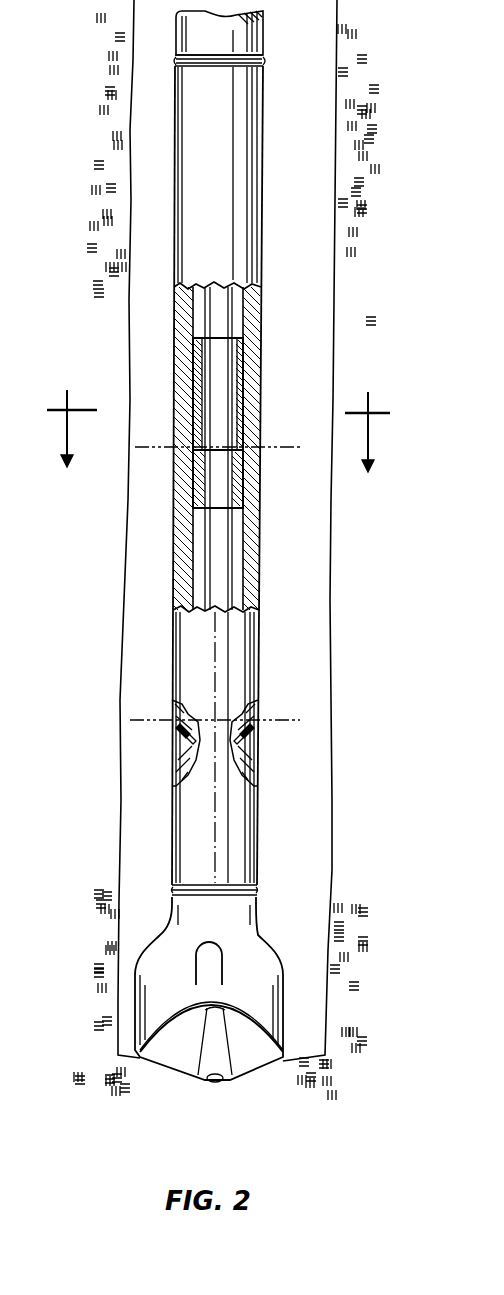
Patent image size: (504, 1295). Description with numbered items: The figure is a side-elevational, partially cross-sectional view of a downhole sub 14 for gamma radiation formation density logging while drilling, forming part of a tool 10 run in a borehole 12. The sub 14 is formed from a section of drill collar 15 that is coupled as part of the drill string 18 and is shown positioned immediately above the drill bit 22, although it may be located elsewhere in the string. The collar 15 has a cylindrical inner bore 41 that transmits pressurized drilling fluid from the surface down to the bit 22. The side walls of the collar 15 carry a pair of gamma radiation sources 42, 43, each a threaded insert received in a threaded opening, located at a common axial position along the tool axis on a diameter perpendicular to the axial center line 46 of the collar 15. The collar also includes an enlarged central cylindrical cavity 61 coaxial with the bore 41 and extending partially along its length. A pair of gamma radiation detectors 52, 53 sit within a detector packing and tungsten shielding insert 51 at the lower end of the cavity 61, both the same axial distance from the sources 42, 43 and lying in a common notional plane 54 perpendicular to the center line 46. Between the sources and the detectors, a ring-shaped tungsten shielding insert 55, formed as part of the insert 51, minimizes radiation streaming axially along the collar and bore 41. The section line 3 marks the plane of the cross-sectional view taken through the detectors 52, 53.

The tool 10 is at (167, 199).
The borehole 12 is at (142, 44).
The sub 14 is at (266, 166).
The drill collar 15 is at (182, 302).
The drill string 18 is at (265, 38).
The drill bit 22 is at (135, 993).
The cylindrical inner bore 41 is at (218, 310).
The gamma radiation source 42 is at (172, 740).
The gamma radiation source 43 is at (257, 738).
The axial center line 46 is at (217, 833).
The detector packing and tungsten shielding insert 51 is at (236, 365).
The gamma radiation detector 52 is at (196, 388).
The gamma radiation detector 53 is at (237, 408).
The notional plane 54 is at (146, 450).
The ring-shaped tungsten shielding insert 55 is at (190, 508).
The central cylindrical cavity 61 is at (237, 484).
The section line 3- 3 is at (217, 426).